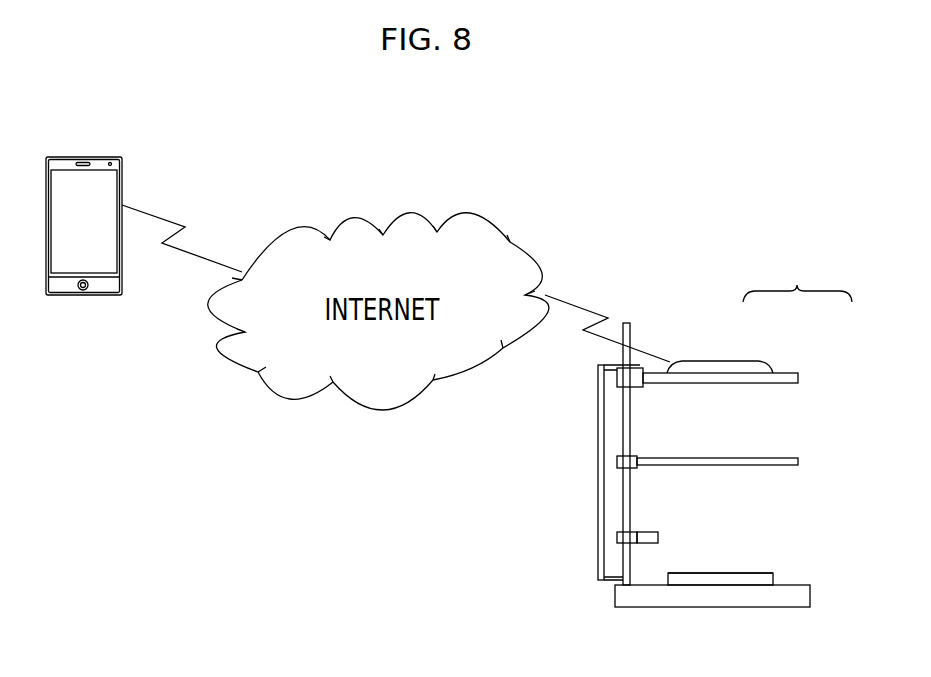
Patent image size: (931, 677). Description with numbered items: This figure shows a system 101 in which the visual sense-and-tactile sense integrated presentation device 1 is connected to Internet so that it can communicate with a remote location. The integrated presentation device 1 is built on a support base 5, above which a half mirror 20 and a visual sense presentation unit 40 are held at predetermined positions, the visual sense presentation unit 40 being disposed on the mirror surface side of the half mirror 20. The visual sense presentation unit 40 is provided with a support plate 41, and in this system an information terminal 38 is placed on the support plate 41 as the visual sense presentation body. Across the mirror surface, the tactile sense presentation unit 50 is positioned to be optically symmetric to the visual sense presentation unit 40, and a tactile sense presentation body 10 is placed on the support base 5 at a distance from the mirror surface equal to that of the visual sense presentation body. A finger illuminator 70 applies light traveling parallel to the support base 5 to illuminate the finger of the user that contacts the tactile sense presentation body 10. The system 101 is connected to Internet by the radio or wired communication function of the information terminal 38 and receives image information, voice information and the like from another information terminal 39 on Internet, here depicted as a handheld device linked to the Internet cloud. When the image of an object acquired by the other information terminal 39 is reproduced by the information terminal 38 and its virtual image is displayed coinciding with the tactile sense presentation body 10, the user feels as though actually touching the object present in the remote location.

The visual sense-and-tactile sense integrated presentation device 1 is at (822, 366).
The support base 5 is at (810, 596).
The tactile sense presentation body 10 is at (750, 573).
The half mirror 20 is at (798, 463).
The information terminal 38 is at (743, 361).
The another information terminal 39 is at (97, 156).
The visual sense presentation unit 40 is at (692, 349).
The support plate 41 is at (798, 380).
The tactile sense presentation unit 50 is at (787, 574).
The finger illuminator 70 is at (658, 538).
The system 101 is at (797, 280).